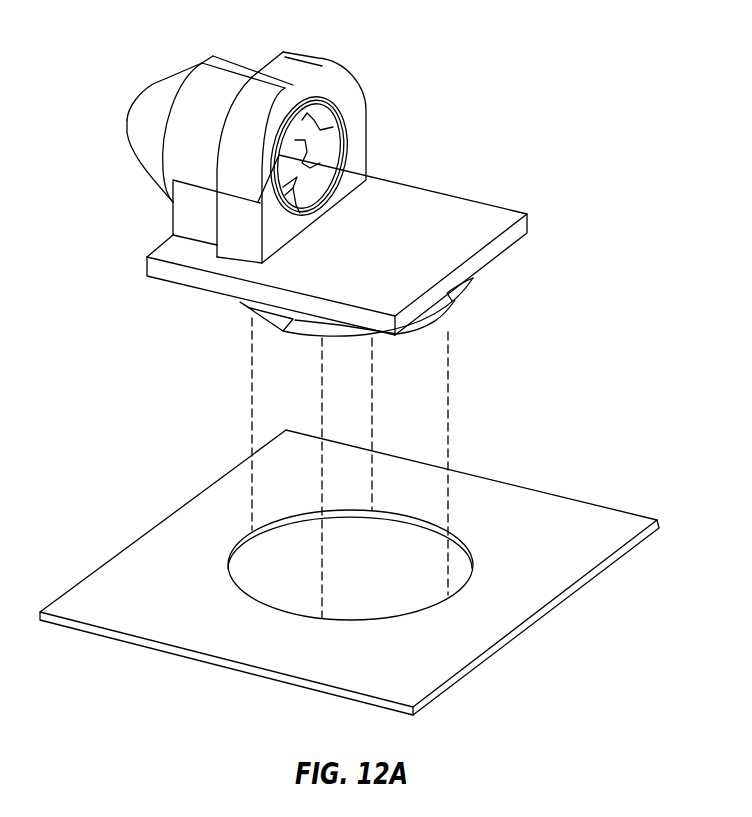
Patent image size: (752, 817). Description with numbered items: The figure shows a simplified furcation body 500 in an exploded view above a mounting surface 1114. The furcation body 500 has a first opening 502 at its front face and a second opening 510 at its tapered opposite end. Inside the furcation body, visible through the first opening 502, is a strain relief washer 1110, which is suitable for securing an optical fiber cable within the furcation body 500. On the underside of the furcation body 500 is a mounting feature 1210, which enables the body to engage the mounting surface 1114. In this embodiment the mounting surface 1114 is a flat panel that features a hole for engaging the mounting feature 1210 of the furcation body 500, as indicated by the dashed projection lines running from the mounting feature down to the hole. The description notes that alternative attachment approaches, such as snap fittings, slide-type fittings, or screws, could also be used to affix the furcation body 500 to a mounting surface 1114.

The furcation body 500 is at (233, 58).
The second opening 510 is at (127, 122).
The strain relief washer 1110 is at (320, 124).
The first opening 502 is at (322, 157).
The mounting feature 1210 is at (457, 303).
The mounting surface 1114 is at (573, 502).